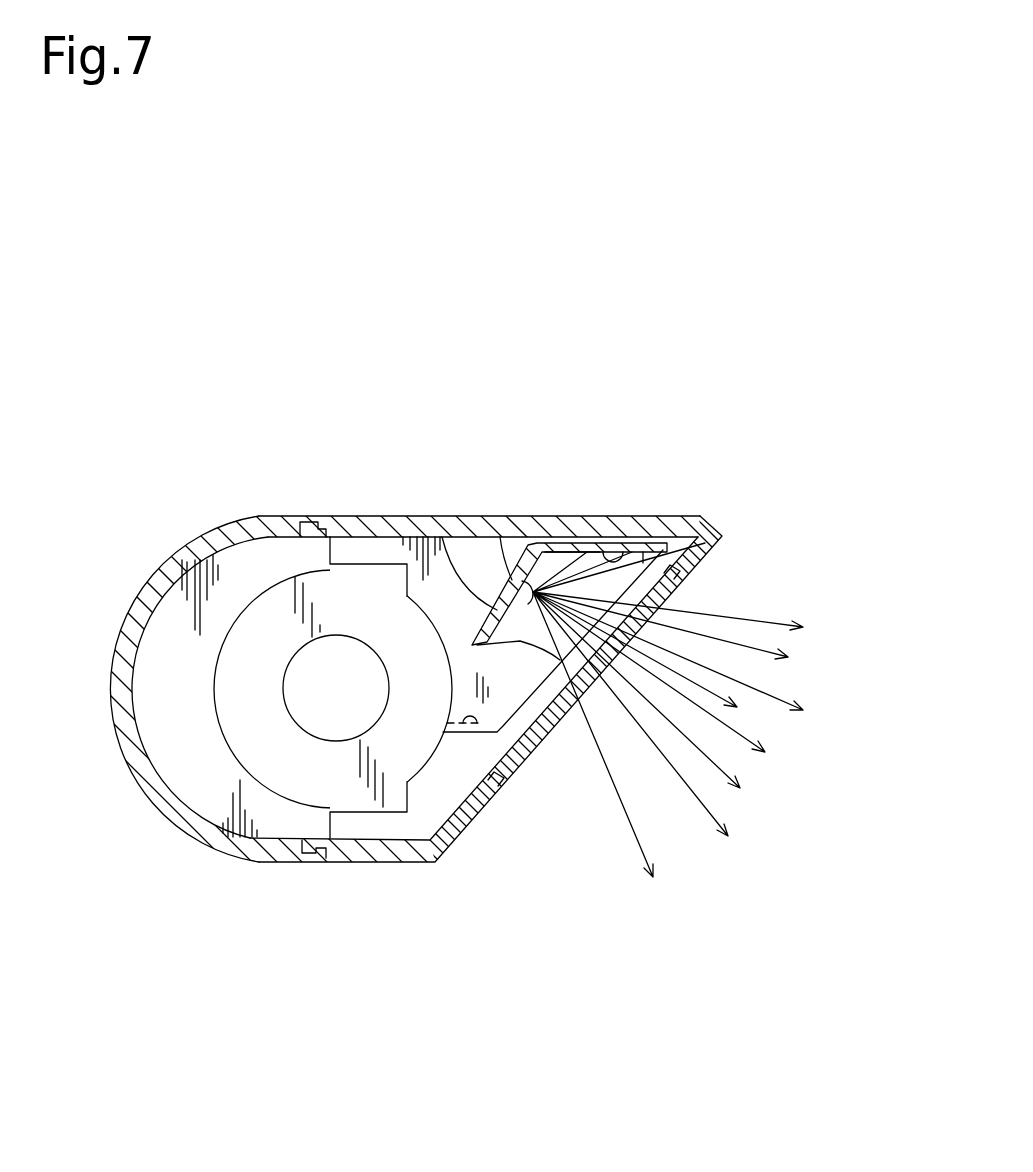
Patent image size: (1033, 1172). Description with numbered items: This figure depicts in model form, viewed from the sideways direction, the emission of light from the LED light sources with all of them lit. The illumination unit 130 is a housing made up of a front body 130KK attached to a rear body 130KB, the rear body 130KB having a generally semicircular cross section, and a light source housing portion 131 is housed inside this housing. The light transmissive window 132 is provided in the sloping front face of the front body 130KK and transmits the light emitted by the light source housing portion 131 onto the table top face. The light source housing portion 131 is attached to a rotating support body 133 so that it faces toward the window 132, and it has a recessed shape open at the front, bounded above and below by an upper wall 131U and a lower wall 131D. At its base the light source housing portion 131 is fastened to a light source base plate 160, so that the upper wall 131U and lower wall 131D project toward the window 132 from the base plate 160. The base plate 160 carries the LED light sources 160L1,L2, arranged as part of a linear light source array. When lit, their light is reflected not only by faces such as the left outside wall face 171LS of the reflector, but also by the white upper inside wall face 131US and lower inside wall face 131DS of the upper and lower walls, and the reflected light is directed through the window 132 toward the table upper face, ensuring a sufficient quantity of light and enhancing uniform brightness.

The illumination unit 130 is at (516, 584).
The rear body 130KB is at (233, 522).
The front body 130KK is at (532, 524).
The light source housing portion 131 is at (516, 713).
The upper wall 131U is at (650, 545).
The upper inside wall face 131US is at (628, 565).
The lower wall 131D is at (470, 742).
The lower inside wall face 131DS is at (477, 648).
The light transmissive window 132 is at (530, 757).
The rotating support body 133 is at (363, 803).
The light source base plate 160 is at (506, 490).
The LED light sources 160L1,L2 is at (500, 537).
The left outside wall face 171LS is at (508, 770).